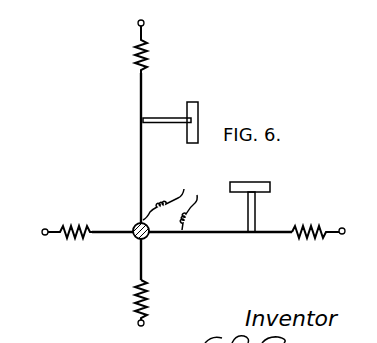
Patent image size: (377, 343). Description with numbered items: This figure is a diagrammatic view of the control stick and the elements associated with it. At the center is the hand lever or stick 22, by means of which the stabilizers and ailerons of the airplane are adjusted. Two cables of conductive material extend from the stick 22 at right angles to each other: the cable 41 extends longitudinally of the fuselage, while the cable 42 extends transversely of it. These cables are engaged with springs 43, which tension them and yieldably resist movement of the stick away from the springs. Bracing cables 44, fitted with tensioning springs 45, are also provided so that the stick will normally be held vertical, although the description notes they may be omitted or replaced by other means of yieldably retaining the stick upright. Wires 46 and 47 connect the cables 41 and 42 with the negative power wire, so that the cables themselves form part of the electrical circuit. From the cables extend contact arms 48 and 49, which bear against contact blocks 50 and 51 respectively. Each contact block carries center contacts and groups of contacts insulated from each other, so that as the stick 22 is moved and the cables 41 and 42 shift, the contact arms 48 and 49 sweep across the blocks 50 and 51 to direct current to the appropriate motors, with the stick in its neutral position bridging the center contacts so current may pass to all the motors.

The hand lever or stick 22 is at (137, 242).
The cable 41 is at (140, 170).
The cable 42 is at (212, 238).
The springs 43 is at (133, 50).
The bracing cables 44 is at (114, 227).
The tensioning springs 45 is at (162, 290).
The wire 46 is at (183, 189).
The wire 47 is at (199, 210).
The contact arm 48 is at (160, 117).
The contact arm 49 is at (255, 210).
The contact block 50 is at (198, 108).
The contact block 51 is at (268, 178).